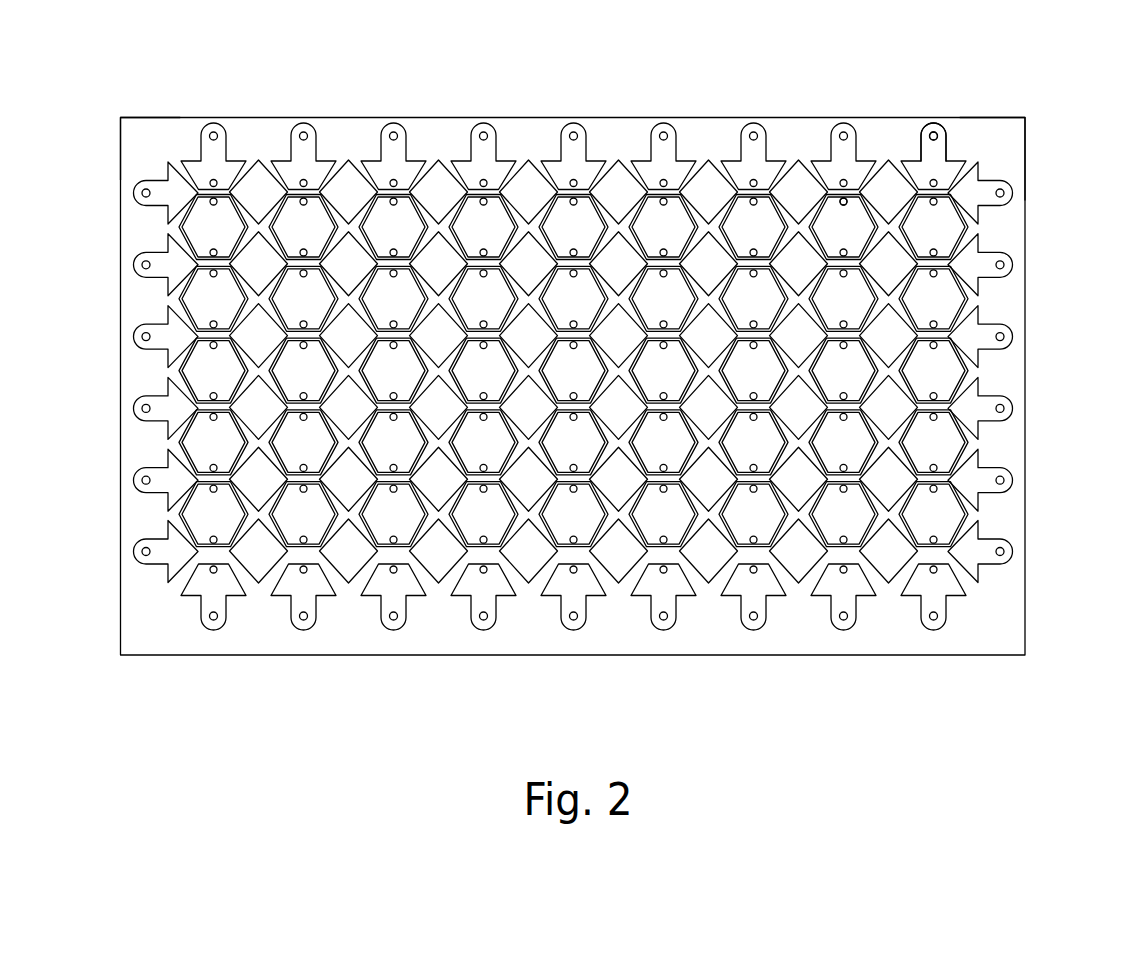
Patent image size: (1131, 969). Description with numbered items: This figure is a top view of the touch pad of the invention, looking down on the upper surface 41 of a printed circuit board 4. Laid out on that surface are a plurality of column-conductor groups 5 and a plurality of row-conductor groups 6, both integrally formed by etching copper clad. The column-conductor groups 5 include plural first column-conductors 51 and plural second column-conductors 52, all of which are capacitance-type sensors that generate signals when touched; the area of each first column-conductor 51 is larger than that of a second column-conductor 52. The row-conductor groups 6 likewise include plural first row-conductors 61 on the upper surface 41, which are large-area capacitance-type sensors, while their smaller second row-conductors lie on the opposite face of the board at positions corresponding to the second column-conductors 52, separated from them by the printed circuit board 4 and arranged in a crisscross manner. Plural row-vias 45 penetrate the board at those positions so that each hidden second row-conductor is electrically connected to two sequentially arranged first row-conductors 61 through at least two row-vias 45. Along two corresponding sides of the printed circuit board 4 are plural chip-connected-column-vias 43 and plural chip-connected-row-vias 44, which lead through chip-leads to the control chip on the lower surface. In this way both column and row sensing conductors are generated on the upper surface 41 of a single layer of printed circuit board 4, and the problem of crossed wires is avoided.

The printed circuit board 4 is at (120, 290).
The upper surface 41 is at (147, 140).
The chip-connected-column-vias 43 is at (934, 135).
The chip-connected-row-vias 44 is at (997, 195).
The row-vias 45 is at (847, 199).
The column-conductor groups 5 is at (1003, 165).
The first column-conductors 51 is at (800, 188).
The second column-conductors 52 is at (745, 190).
The row-conductor groups 6 is at (957, 138).
The first row-conductors 61 is at (937, 231).